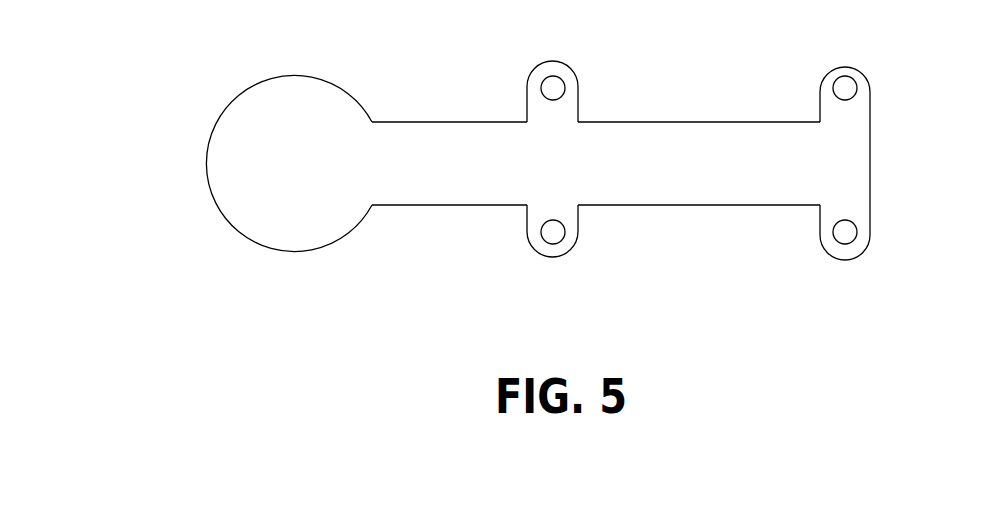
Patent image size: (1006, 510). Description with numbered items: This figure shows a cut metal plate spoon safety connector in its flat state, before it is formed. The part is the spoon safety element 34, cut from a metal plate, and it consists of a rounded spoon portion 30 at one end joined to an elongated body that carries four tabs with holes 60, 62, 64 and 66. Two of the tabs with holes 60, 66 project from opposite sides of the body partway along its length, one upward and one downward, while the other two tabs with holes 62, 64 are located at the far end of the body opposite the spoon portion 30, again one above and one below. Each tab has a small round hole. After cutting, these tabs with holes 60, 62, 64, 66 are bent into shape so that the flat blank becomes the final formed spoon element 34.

The spoon portion 30 is at (272, 217).
The spoon safety element 34 is at (638, 175).
The tab with hole 60 is at (551, 87).
The tab with hole 66 is at (552, 235).
The tab with hole 62 is at (845, 90).
The tab with hole 64 is at (843, 230).